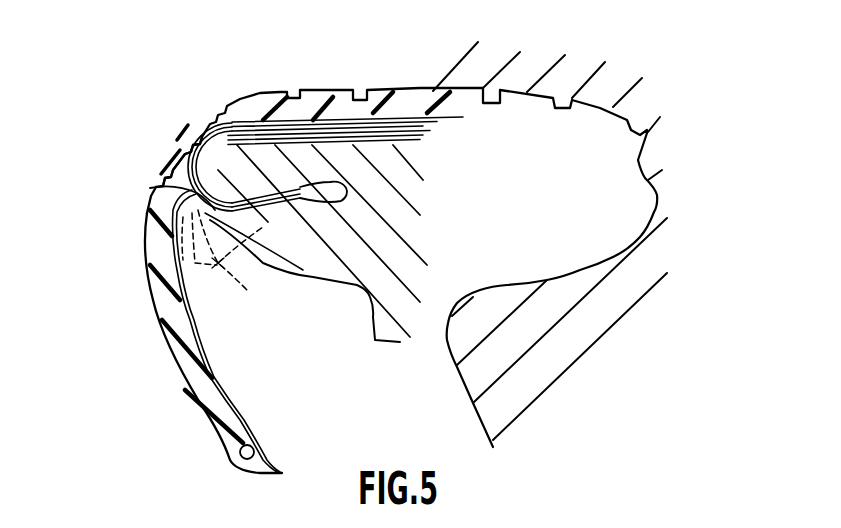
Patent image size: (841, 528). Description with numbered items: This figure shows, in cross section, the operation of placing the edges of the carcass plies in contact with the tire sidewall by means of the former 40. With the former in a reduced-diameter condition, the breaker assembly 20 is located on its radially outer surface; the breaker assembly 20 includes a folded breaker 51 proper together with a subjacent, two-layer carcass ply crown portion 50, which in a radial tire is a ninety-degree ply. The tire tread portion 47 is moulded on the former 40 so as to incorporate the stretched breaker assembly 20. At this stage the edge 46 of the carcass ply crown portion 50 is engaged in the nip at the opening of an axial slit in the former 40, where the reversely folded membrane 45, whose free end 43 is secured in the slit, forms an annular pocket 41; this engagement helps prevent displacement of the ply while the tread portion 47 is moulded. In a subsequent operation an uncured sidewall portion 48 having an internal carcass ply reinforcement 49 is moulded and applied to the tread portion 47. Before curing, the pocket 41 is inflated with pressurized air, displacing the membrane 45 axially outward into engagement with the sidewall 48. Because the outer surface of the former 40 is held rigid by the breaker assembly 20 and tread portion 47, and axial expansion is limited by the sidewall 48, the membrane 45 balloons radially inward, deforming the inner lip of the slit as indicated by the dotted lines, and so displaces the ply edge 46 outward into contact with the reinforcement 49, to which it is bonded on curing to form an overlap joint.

The breaker assembly 20 is at (357, 156).
The former 40 is at (325, 241).
The annular pocket 41 is at (172, 147).
The free end of membrane extension 43 is at (347, 200).
The membrane extension 45 is at (156, 187).
The edge of carcass ply crown portion 46 is at (263, 223).
The tire tread portion 47 is at (257, 110).
The sidewall portion 48 is at (167, 307).
The carcass ply reinforcement 49 is at (213, 377).
The carcass ply crown portion 50 is at (423, 142).
The folded breaker 51 is at (355, 122).